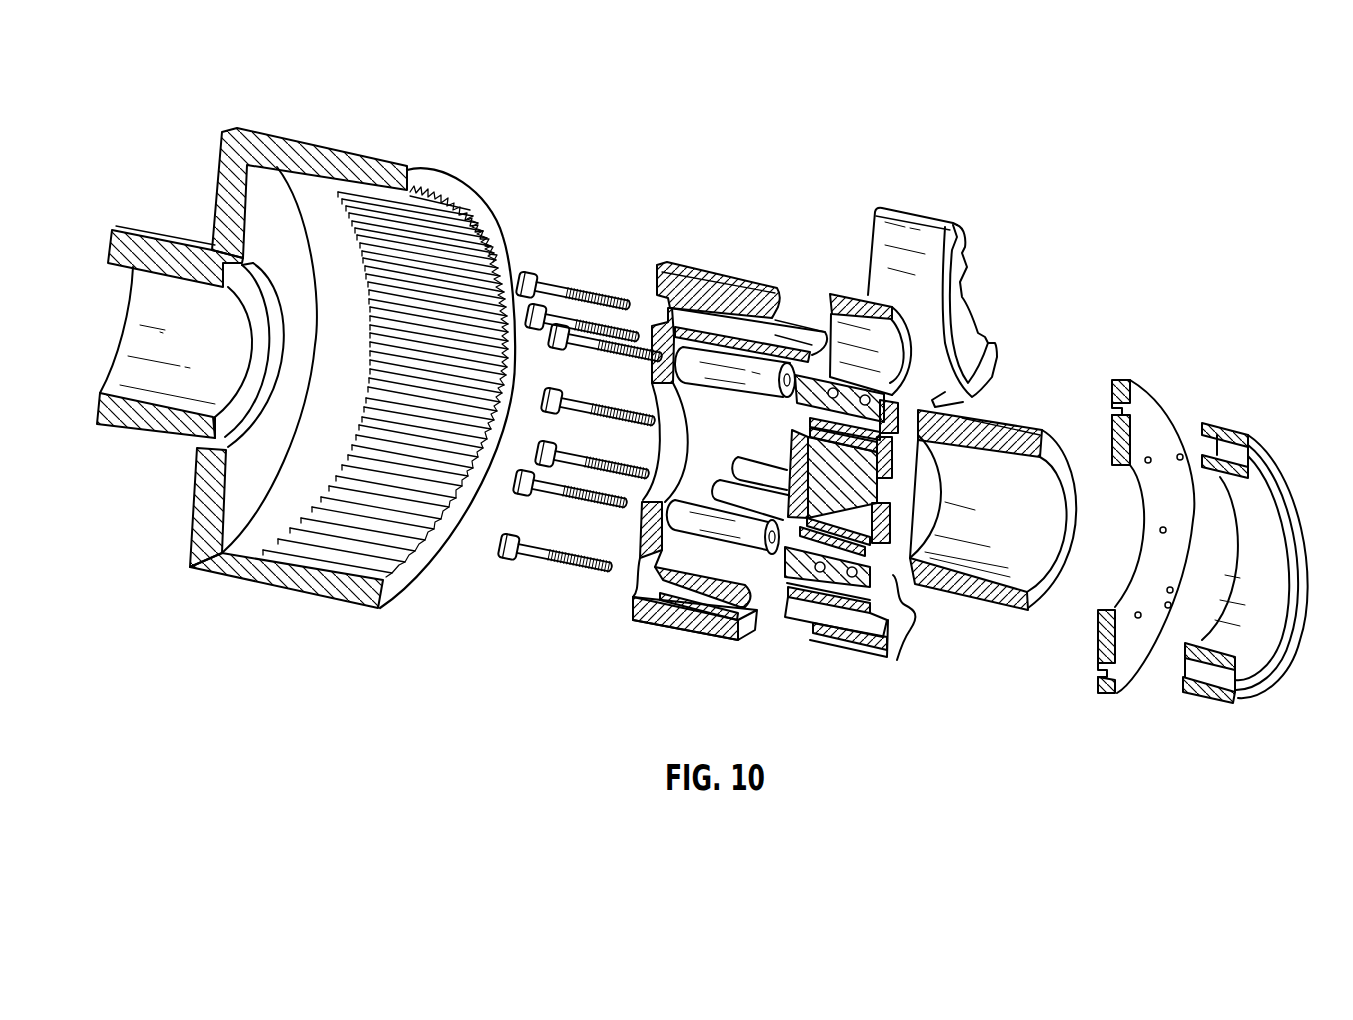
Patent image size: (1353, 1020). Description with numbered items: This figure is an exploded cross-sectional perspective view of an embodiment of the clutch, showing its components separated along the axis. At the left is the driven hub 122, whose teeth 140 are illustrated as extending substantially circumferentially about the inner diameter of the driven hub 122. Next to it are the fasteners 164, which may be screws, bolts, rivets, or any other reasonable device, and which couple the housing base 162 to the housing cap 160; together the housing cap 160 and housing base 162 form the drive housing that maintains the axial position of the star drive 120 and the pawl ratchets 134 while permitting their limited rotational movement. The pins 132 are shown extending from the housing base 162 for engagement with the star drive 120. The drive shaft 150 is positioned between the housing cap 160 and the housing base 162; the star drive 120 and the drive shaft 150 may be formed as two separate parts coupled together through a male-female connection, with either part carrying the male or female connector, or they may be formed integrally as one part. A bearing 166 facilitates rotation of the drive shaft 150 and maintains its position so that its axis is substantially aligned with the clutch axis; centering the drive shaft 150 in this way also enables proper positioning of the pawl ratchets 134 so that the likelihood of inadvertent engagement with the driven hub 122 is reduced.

The star drive 120 is at (851, 300).
The driven hub 122 is at (292, 160).
The pins 132 is at (722, 364).
The pawl ratchets 134 is at (913, 217).
The teeth 140 is at (472, 246).
The drive shaft 150 is at (1003, 596).
The housing cap 160 is at (1128, 378).
The housing base 162 is at (670, 262).
The fasteners 164 is at (574, 566).
The bearing 166 is at (1243, 428).